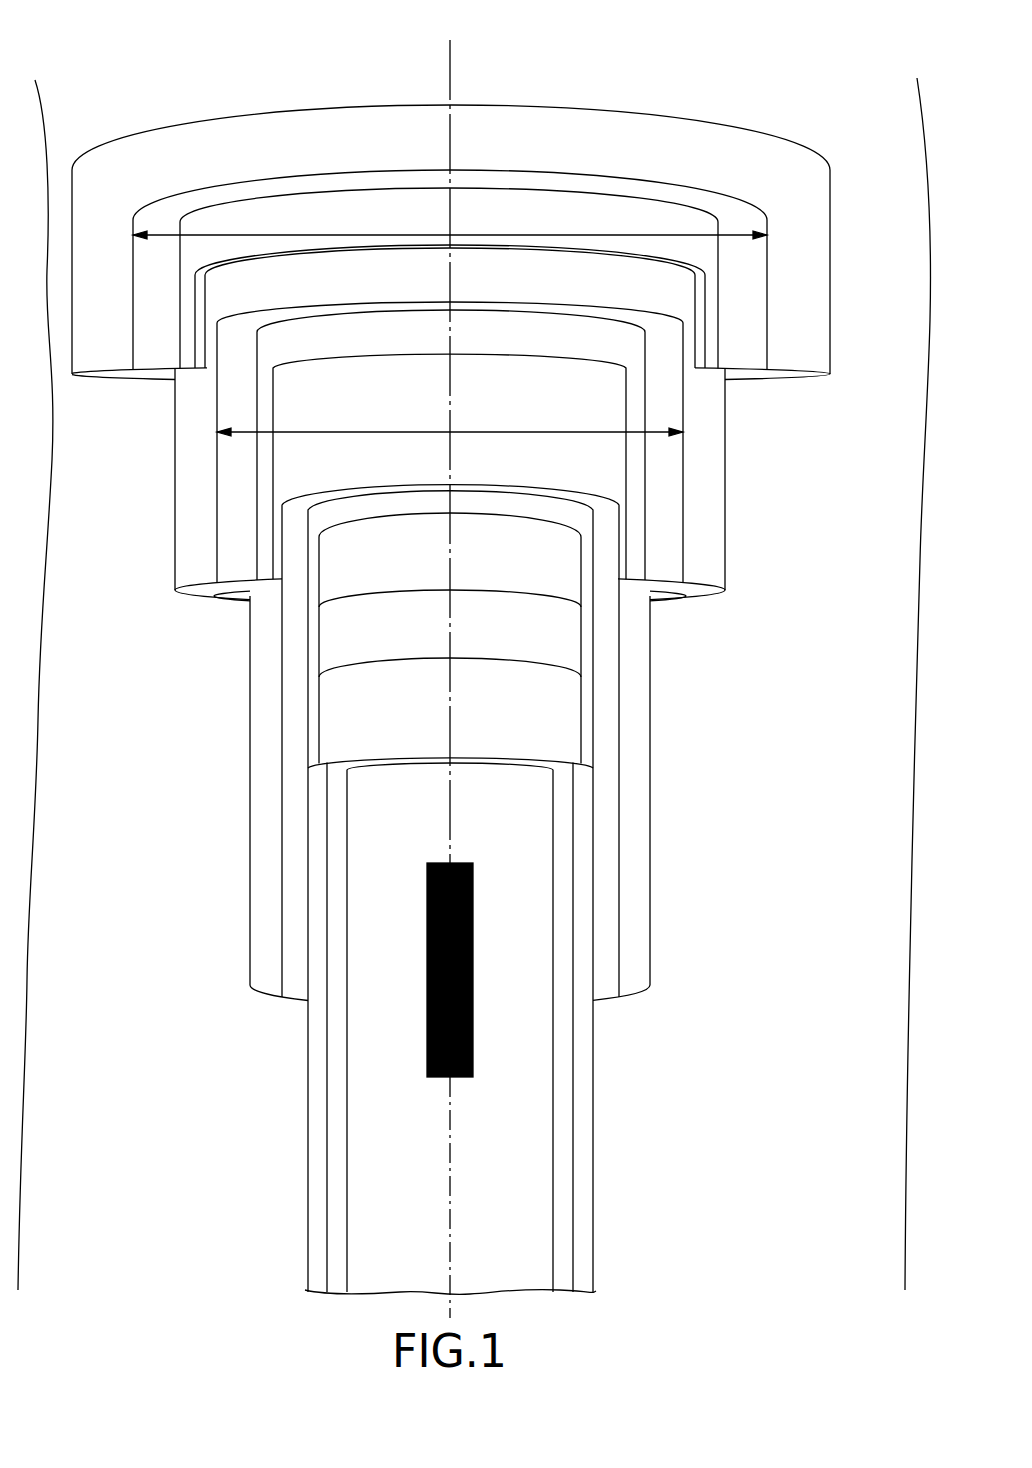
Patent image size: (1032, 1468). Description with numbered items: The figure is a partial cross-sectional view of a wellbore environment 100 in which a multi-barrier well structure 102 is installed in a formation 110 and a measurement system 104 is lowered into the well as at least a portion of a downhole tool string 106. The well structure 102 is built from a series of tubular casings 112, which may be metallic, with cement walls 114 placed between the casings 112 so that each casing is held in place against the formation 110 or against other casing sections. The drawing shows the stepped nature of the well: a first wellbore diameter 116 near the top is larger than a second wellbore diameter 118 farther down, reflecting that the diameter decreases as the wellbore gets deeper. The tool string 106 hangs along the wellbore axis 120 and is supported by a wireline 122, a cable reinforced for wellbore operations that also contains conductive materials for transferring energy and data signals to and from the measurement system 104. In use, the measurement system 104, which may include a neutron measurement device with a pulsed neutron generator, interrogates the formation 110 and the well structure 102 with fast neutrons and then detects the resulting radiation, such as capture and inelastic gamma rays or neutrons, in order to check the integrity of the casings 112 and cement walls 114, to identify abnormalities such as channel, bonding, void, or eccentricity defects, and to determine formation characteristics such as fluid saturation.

The wellbore environment 100 is at (486, 676).
The multi-barrier well structure 102 is at (486, 324).
The measurement system 104 is at (413, 1060).
The downhole tool string 106 is at (517, 847).
The formation 110 is at (112, 627).
The tubular casings 112 is at (832, 225).
The cement walls 114 is at (748, 340).
The first wellbore diameter 116 is at (558, 234).
The second wellbore diameter 118 is at (323, 432).
The wellbore axis 120 is at (450, 1300).
The wireline 122 is at (450, 85).